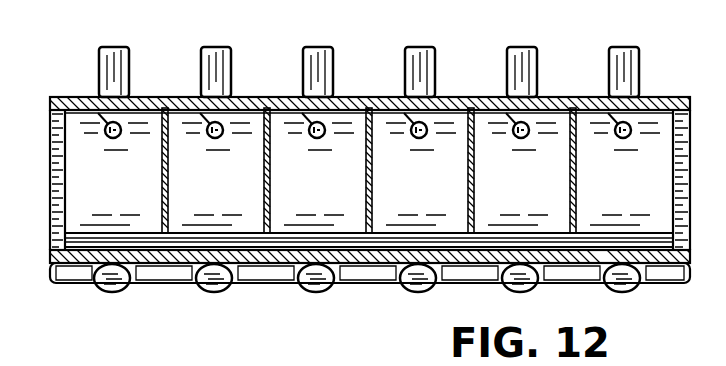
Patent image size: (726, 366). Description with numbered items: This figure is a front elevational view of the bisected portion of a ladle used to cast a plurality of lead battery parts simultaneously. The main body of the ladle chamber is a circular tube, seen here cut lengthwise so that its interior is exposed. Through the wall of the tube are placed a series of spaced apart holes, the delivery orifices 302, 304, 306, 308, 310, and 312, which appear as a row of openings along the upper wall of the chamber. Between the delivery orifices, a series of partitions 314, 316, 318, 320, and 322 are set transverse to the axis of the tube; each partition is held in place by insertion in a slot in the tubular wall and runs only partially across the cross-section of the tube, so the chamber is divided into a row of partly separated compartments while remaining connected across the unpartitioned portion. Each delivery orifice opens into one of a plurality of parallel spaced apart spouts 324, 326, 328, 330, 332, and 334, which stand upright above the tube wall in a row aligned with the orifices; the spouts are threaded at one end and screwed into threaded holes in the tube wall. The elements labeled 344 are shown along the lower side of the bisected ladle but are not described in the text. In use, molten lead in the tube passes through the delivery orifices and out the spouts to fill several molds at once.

The delivery orifice 302 is at (98, 95).
The delivery orifice 304 is at (198, 95).
The delivery orifice 306 is at (300, 95).
The delivery orifice 308 is at (402, 95).
The delivery orifice 310 is at (505, 95).
The delivery orifice 312 is at (608, 95).
The partition 314 is at (165, 206).
The partition 316 is at (267, 206).
The partition 318 is at (369, 206).
The partition 320 is at (471, 206).
The partition 322 is at (573, 206).
The spout 324 is at (100, 63).
The spout 326 is at (202, 63).
The spout 328 is at (304, 63).
The spout 330 is at (406, 63).
The spout 332 is at (508, 63).
The spout 334 is at (610, 63).
The outlet opening 344 is at (214, 293).